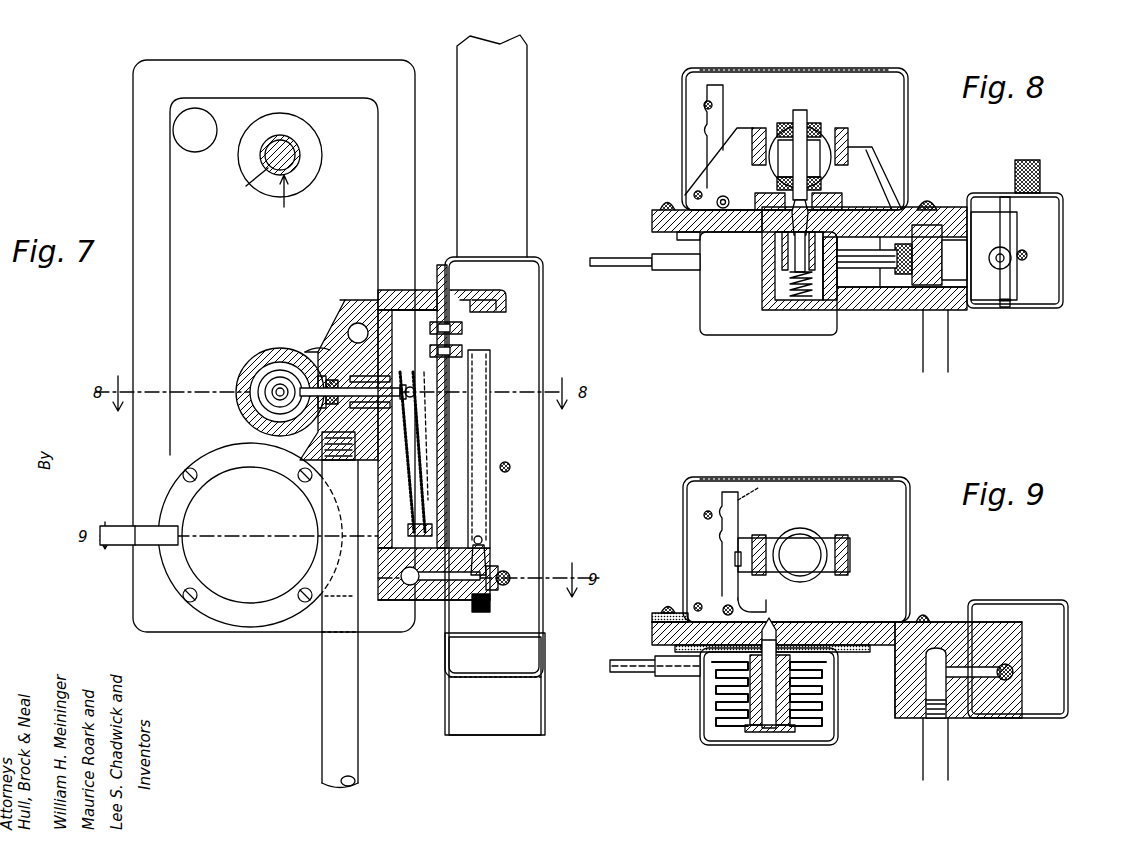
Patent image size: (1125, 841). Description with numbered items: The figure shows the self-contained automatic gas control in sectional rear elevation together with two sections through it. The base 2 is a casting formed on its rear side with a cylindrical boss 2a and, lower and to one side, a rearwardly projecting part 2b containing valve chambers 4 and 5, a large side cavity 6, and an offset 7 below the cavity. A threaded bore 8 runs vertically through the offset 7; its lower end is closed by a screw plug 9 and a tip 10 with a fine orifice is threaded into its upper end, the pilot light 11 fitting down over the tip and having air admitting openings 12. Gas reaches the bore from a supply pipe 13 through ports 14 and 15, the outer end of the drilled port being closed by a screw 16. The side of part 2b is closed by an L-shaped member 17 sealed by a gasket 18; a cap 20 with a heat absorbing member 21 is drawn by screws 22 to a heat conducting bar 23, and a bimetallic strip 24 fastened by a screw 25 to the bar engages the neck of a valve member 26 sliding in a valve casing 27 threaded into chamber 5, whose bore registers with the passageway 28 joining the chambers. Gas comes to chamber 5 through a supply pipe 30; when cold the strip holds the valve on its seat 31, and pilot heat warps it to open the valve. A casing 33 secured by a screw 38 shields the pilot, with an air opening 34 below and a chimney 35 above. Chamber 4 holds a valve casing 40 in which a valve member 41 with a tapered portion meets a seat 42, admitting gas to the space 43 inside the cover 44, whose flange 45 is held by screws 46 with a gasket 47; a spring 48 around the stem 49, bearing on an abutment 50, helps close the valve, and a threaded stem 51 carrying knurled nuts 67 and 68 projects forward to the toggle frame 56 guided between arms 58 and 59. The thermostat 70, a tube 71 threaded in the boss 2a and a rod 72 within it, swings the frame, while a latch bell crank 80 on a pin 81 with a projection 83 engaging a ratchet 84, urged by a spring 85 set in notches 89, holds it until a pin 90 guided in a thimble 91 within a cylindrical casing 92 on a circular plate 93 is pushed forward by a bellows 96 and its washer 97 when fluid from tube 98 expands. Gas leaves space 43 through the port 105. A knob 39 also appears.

In FIG. 7, the base 2 is at (274, 346).
In FIG. 8, the base 2 is at (652, 220).
In FIG. 9, the base 2 is at (652, 638).
In FIG. 7, the cylindrical boss 2a is at (310, 140).
In FIG. 7, the rearwardly projecting part 2b is at (308, 335).
In FIG. 8, the rearwardly projecting part 2b is at (860, 310).
In FIG. 9, the rearwardly projecting part 2b is at (895, 700).
In FIG. 7, the valve chamber 4 is at (262, 366).
In FIG. 8, the valve chamber 4 is at (768, 300).
In FIG. 7, the valve chamber 5 is at (322, 380).
In FIG. 8, the valve chamber 5 is at (900, 287).
In FIG. 7, the cavity 6 is at (402, 310).
In FIG. 8, the cavity 6 is at (950, 280).
In FIG. 7, the offset 7 is at (462, 600).
In FIG. 9, the offset 7 is at (997, 718).
In FIG. 7, the threaded bore 8 is at (498, 570).
In FIG. 7, the screw plug 9 is at (490, 605).
In FIG. 7, the tip 10 is at (484, 552).
In FIG. 8, the tip 10 is at (998, 270).
In FIG. 7, the pilot light 11 is at (490, 486).
In FIG. 8, the pilot light 11 is at (987, 253).
In FIG. 7, the air admitting openings 12 is at (482, 540).
In FIG. 8, the supply pipe 13 is at (940, 355).
In FIG. 9, the supply pipe 13 is at (930, 756).
In FIG. 7, the port 14 is at (408, 586).
In FIG. 9, the port 14 is at (930, 665).
In FIG. 7, the port 15 is at (432, 600).
In FIG. 9, the port 15 is at (957, 622).
In FIG. 7, the screw 16 is at (508, 583).
In FIG. 8, the screw 16 is at (1025, 252).
In FIG. 9, the screw 16 is at (1010, 665).
In FIG. 7, the member 17 is at (442, 268).
In FIG. 8, the member 17 is at (1003, 308).
In FIG. 7, the gasket 18 is at (410, 312).
In FIG. 7, the cap 20 is at (500, 290).
In FIG. 7, the heat absorbing member 21 is at (480, 302).
In FIG. 7, the screws 22 is at (462, 328).
In FIG. 7, the heat conducting bar 23 is at (388, 380).
In FIG. 8, the heat conducting bar 23 is at (985, 245).
In FIG. 7, the bimetallic strip 24 is at (408, 478).
In FIG. 8, the bimetallic strip 24 is at (925, 290).
In FIG. 7, the screw 25 is at (410, 526).
In FIG. 7, the valve member 26 is at (406, 385).
In FIG. 7, the valve casing 27 is at (336, 322).
In FIG. 8, the valve casing 27 is at (880, 300).
In FIG. 7, the passageway 28 is at (300, 370).
In FIG. 7, the supply pipe 30 is at (350, 672).
In FIG. 7, the seat 31 is at (330, 385).
In FIG. 7, the casing 33 is at (543, 452).
In FIG. 8, the casing 33 is at (1063, 250).
In FIG. 9, the casing 33 is at (1068, 655).
In FIG. 7, the opening 34 is at (505, 677).
In FIG. 7, the chimney 35 is at (512, 130).
In FIG. 7, the screw 38 is at (507, 462).
In FIG. 8, the screw 38 is at (1010, 210).
In FIG. 8, the knob 39 is at (1040, 168).
In FIG. 8, the valve casing 40 is at (795, 240).
In FIG. 8, the valve member 41 is at (808, 215).
In FIG. 8, the seat 42 is at (784, 255).
In FIG. 8, the space 43 is at (822, 70).
In FIG. 9, the space 43 is at (825, 479).
In FIG. 8, the cover 44 is at (682, 150).
In FIG. 9, the cover 44 is at (910, 525).
In FIG. 9, the flange 45 is at (652, 617).
In FIG. 8, the screws 46 is at (662, 202).
In FIG. 9, the screws 46 is at (665, 606).
In FIG. 9, the gasket 47 is at (652, 627).
In FIG. 8, the spring 48 is at (830, 300).
In FIG. 7, the stem 49 is at (262, 418).
In FIG. 8, the stem 49 is at (780, 290).
In FIG. 7, the abutment 50 is at (276, 392).
In FIG. 8, the abutment 50 is at (800, 298).
In FIG. 8, the threaded stem 51 is at (800, 118).
In FIG. 8, the toggle frame 56 is at (848, 135).
In FIG. 9, the toggle frame 56 is at (842, 537).
In FIG. 8, the arm 58 is at (875, 152).
In FIG. 8, the arm 59 is at (719, 161).
In FIG. 8, the knurled nut 67 is at (818, 124).
In FIG. 8, the knurled nut 68 is at (822, 183).
In FIG. 7, the thermostat 70 is at (281, 200).
In FIG. 7, the tube 71 is at (296, 162).
In FIG. 7, the rod 72 is at (246, 186).
In FIG. 9, the bell crank 80 is at (722, 567).
In FIG. 8, the pin 81 is at (722, 196).
In FIG. 9, the pin 81 is at (732, 607).
In FIG. 9, the projection 83 is at (735, 558).
In FIG. 9, the ratchet 84 is at (752, 548).
In FIG. 8, the spring 85 is at (704, 105).
In FIG. 9, the spring 85 is at (704, 515).
In FIG. 9, the notches 89 is at (740, 498).
In FIG. 9, the pin 90 is at (780, 636).
In FIG. 9, the thimble 91 is at (752, 712).
In FIG. 7, the cylindrical casing 92 is at (250, 535).
In FIG. 8, the cylindrical casing 92 is at (700, 310).
In FIG. 9, the cylindrical casing 92 is at (700, 700).
In FIG. 9, the circular plate 93 is at (852, 652).
In FIG. 9, the diaphragm or bellows 96 is at (815, 728).
In FIG. 9, the washer 97 is at (770, 732).
In FIG. 7, the tube 98 is at (118, 548).
In FIG. 8, the tube 98 is at (640, 268).
In FIG. 9, the tube 98 is at (640, 672).
In FIG. 7, the port 105 is at (358, 323).